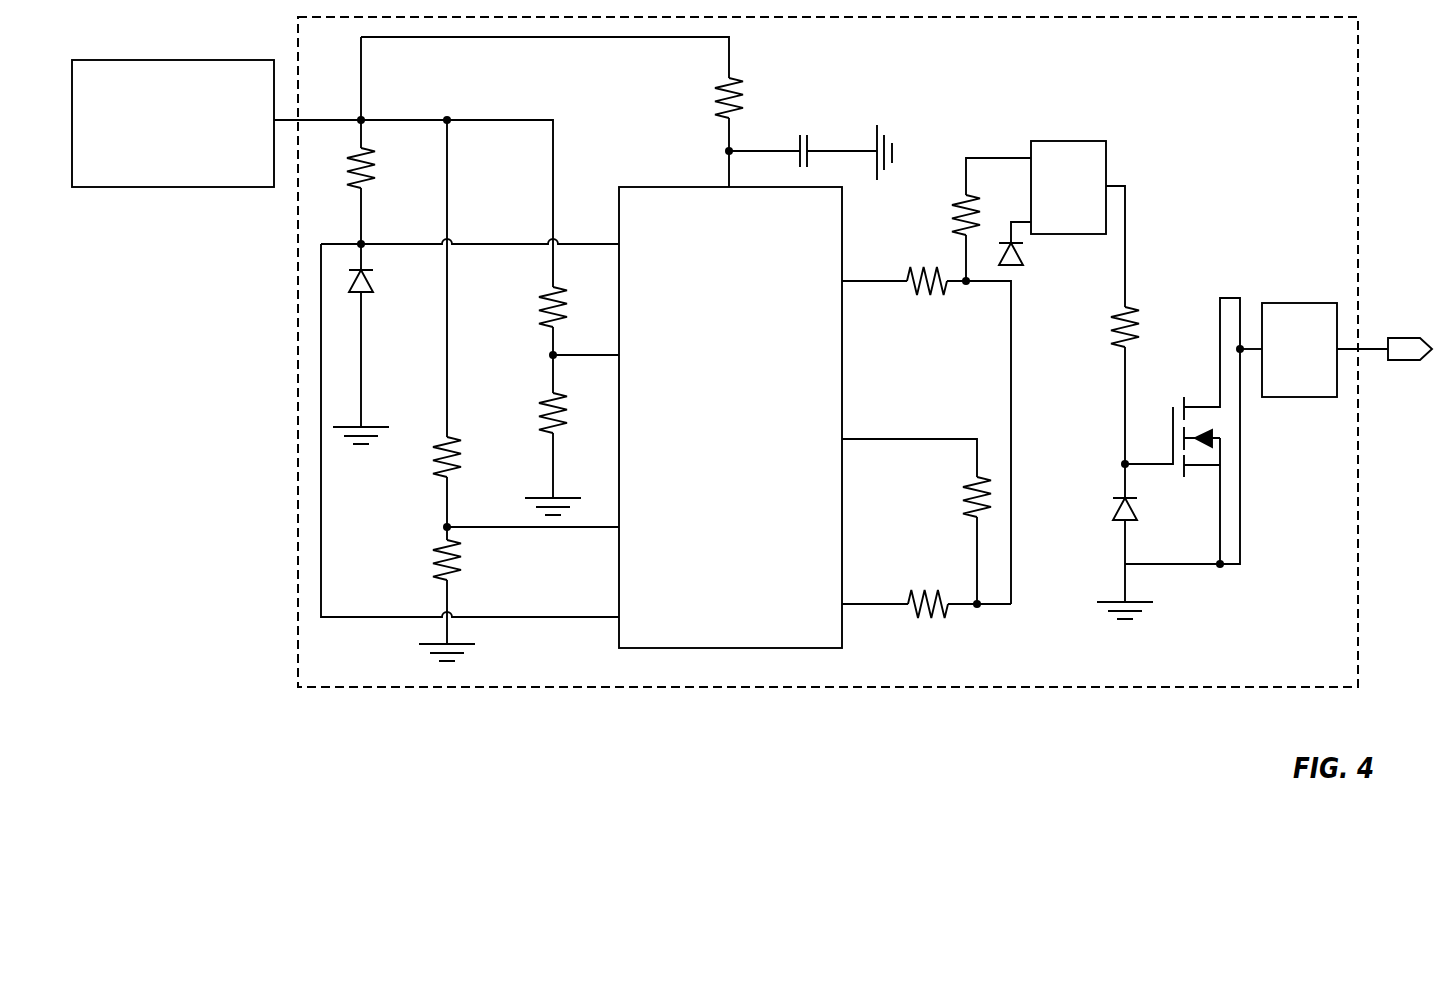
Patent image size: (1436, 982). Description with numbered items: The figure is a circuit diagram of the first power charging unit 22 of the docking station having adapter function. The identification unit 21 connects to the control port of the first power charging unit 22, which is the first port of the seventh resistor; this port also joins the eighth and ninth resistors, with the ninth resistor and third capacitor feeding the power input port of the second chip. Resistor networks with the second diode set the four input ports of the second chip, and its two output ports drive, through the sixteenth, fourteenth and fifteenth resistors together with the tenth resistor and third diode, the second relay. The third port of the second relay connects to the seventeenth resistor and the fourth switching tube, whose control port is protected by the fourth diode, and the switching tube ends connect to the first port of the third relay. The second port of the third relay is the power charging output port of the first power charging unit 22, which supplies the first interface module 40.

The identification unit 21 is at (216, 123).
The first power charging unit 22 is at (363, 673).
The first interface module 40 is at (1384, 330).